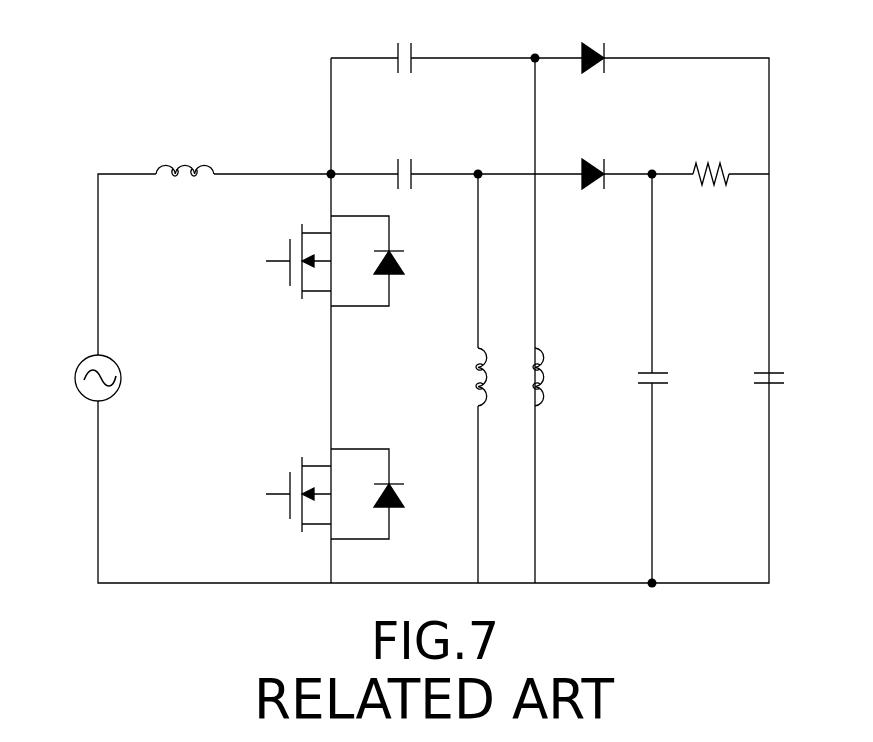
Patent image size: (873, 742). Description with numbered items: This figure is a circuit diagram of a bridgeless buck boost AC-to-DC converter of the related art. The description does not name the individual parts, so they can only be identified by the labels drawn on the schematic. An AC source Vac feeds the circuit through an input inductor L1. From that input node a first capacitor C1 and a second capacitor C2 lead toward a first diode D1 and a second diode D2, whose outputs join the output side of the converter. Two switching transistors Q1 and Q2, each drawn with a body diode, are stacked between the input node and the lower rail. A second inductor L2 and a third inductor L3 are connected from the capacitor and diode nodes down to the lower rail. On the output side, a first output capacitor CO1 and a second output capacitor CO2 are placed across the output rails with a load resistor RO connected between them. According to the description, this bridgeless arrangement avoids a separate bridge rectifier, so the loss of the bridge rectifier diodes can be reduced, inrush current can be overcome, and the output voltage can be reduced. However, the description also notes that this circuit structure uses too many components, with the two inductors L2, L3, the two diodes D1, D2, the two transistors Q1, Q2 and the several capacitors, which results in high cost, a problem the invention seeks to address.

The AC voltage source Vac is at (73, 378).
The input inductor L1 is at (185, 189).
The first capacitor C1 is at (405, 43).
The second capacitor C2 is at (405, 159).
The first diode D1 is at (594, 43).
The second diode D2 is at (594, 159).
The output load resistor RO is at (711, 156).
The first switching transistor Q1 is at (331, 255).
The second switching transistor Q2 is at (331, 488).
The second inductor L2 is at (464, 377).
The third inductor L3 is at (555, 377).
The first output capacitor CO1 is at (678, 382).
The second output capacitor CO2 is at (795, 382).